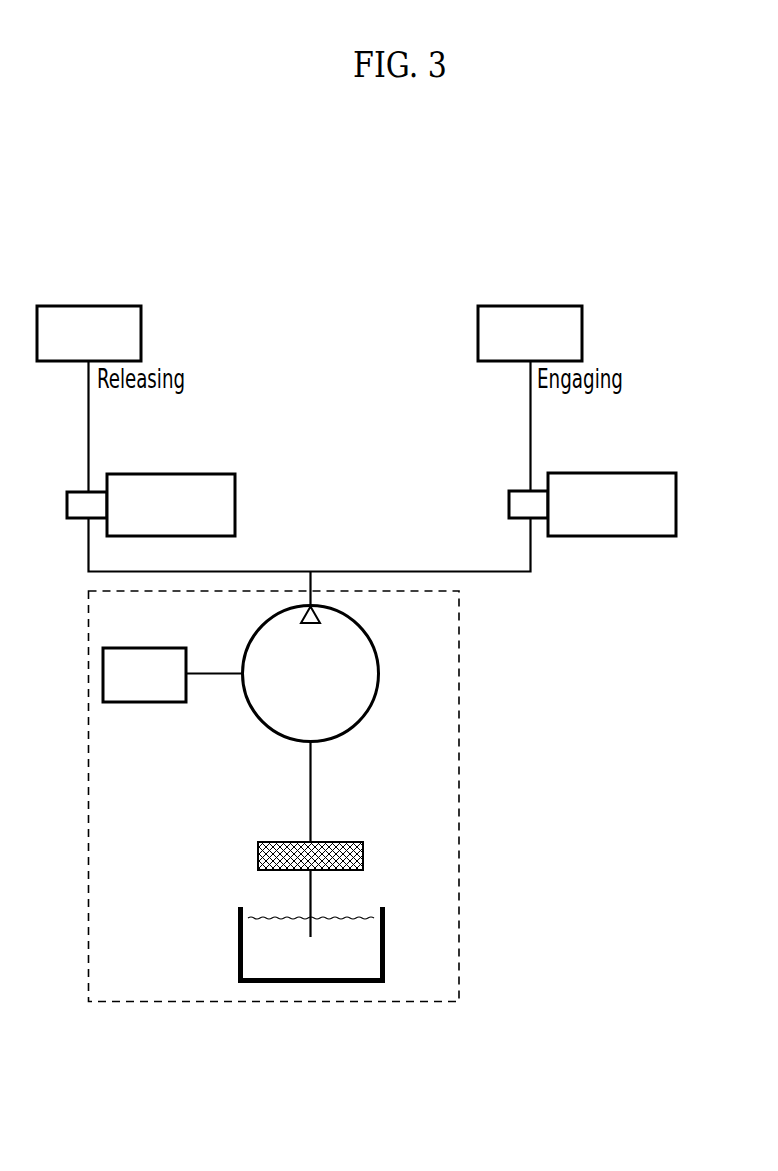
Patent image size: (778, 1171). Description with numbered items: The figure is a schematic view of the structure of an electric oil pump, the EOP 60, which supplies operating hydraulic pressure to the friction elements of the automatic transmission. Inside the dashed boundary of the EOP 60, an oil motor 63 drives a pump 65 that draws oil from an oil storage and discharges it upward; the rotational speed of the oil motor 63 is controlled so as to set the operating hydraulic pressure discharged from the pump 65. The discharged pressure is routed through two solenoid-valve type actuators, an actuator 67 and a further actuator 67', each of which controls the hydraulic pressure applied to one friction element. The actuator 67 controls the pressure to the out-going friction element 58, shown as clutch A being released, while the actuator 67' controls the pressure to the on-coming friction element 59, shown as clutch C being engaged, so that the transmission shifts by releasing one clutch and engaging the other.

The out-going friction element 58 is at (88, 305).
The on-coming friction element 59 is at (530, 305).
The actuator 67 is at (151, 479).
The actuator 67' is at (592, 479).
The electric oil pump (EOP) 60 is at (459, 795).
The pump 65 is at (379, 673).
The oil motor 63 is at (140, 703).